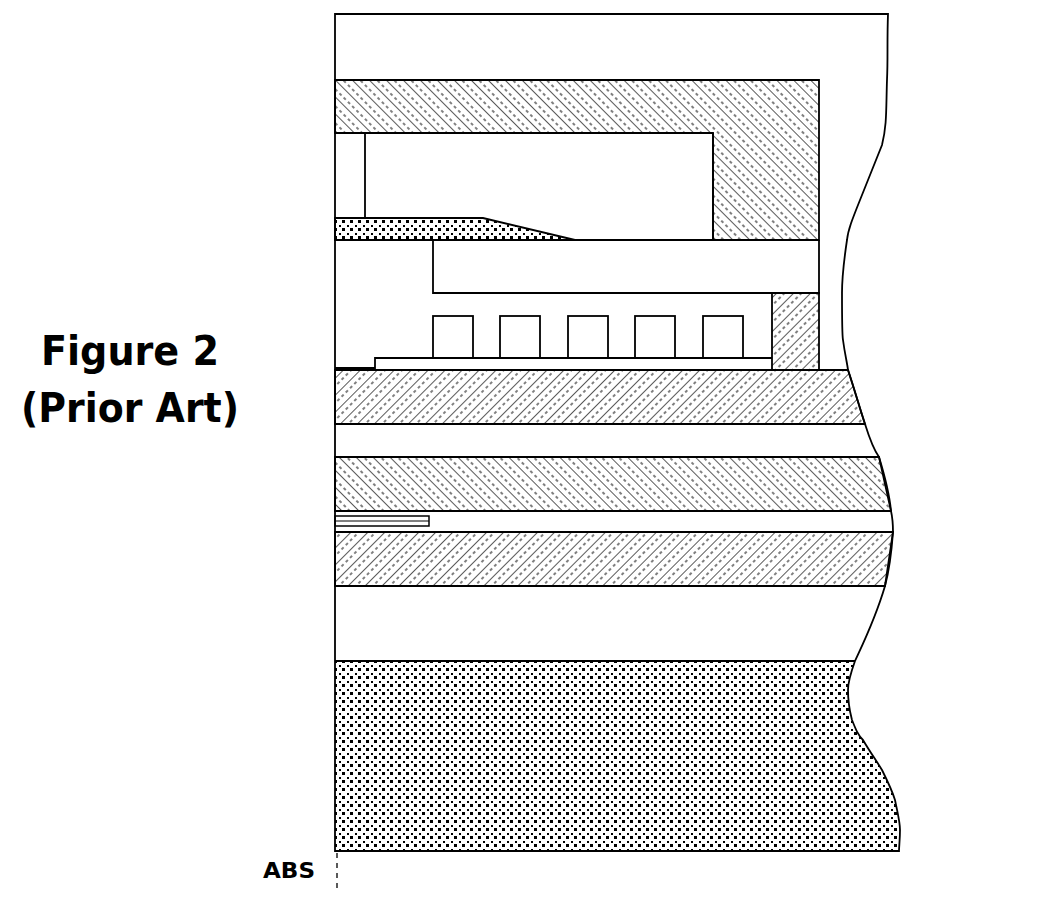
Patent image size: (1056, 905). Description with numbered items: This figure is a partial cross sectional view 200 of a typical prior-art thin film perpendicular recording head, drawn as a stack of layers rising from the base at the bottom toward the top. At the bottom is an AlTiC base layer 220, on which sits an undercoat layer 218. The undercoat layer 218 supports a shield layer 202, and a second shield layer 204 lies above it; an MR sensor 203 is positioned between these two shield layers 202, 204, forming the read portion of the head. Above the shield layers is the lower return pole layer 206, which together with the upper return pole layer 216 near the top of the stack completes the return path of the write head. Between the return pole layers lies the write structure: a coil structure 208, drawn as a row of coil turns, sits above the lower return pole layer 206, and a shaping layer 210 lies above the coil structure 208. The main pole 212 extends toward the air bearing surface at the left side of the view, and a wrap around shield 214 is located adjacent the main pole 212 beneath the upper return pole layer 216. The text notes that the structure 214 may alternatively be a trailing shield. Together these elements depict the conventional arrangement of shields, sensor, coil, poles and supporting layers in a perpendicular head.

The partial cross sectional view 200 is at (892, 217).
The shield layer 202 is at (484, 572).
The MR sensor 203 is at (337, 521).
The shield layer 204 is at (484, 506).
The lower return pole layer 206 is at (468, 411).
The coil structure 208 is at (432, 340).
The shaping layer 210 is at (634, 278).
The main pole 212 is at (487, 216).
The wrap around shield 214 is at (351, 176).
The upper return pole layer 216 is at (548, 118).
The undercoat layer 218 is at (533, 641).
The AlTiC base layer 220 is at (578, 758).